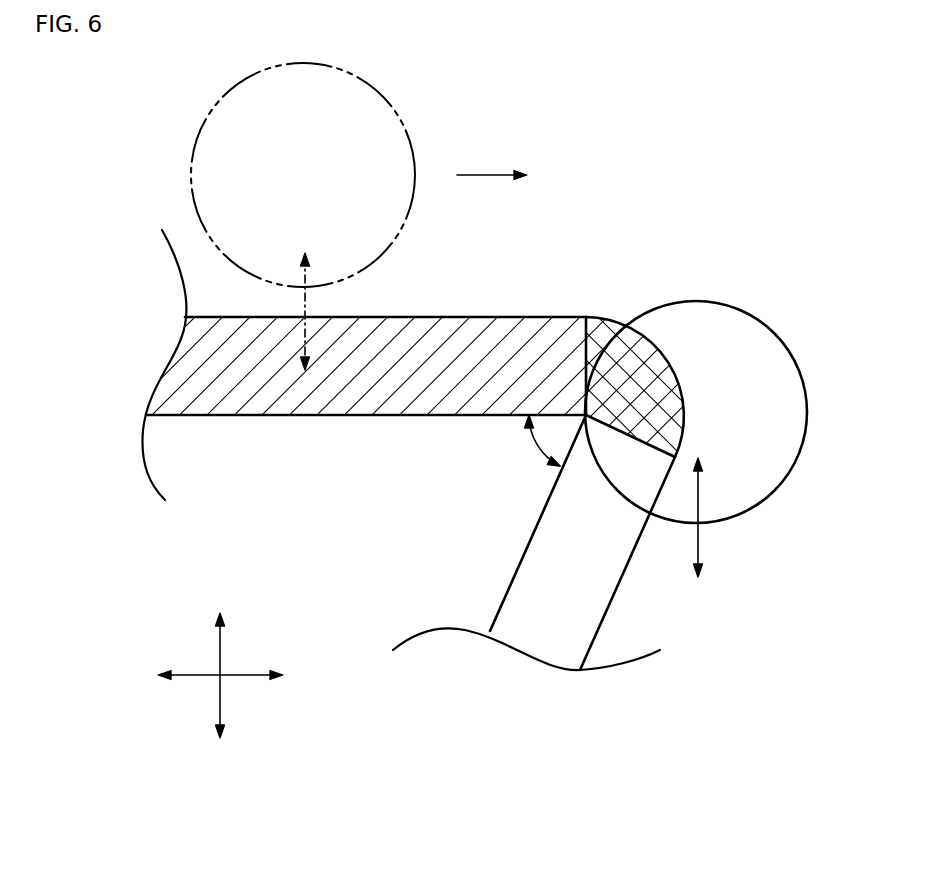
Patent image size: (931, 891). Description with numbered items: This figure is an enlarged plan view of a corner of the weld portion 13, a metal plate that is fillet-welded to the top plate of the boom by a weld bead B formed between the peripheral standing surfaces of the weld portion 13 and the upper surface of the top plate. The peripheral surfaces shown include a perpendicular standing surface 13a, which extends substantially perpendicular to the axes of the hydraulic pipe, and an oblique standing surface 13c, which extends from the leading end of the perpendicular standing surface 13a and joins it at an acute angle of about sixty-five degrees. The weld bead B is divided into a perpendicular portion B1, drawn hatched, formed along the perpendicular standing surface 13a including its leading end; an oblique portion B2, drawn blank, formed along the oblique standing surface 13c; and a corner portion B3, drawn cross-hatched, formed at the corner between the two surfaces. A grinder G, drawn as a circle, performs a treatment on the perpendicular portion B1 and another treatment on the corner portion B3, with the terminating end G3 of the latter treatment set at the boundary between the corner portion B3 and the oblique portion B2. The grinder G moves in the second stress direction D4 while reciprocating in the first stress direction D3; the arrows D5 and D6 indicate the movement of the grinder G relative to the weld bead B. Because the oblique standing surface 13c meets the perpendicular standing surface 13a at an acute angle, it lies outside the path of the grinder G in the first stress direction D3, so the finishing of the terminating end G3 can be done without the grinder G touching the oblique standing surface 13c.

The weld portion 13 is at (375, 555).
The perpendicular standing surface 13a is at (404, 417).
The oblique standing surface 13c is at (525, 560).
The weld bead B is at (632, 219).
The perpendicular portion B1 is at (472, 343).
The oblique portion B2 is at (592, 603).
The corner portion B3 is at (607, 332).
The grinder G is at (370, 82).
The terminating end G3 is at (655, 455).
The gap distance D5 is at (307, 303).
The movement direction D6 is at (488, 175).
The first stress direction D3 is at (223, 661).
The second stress direction D4 is at (238, 678).